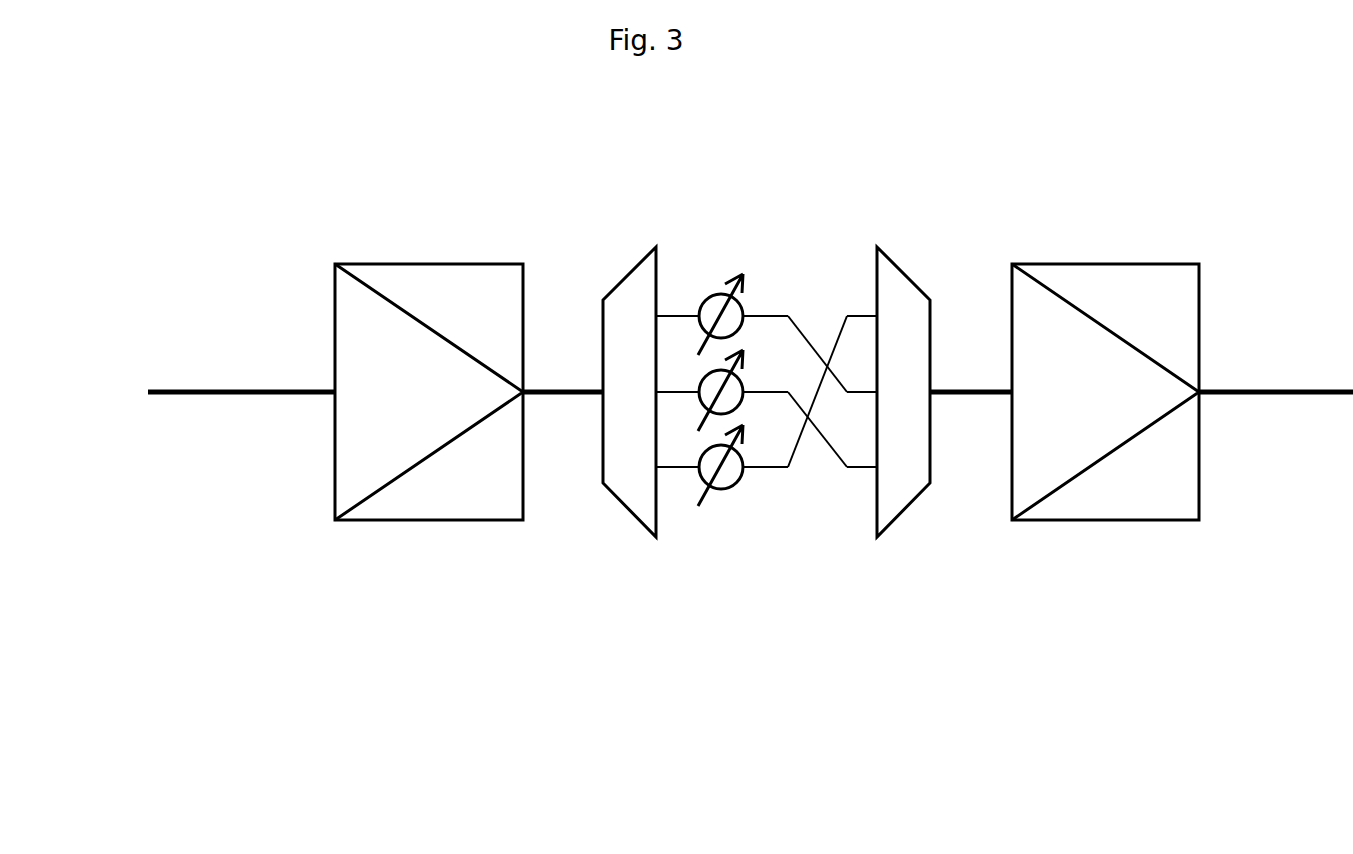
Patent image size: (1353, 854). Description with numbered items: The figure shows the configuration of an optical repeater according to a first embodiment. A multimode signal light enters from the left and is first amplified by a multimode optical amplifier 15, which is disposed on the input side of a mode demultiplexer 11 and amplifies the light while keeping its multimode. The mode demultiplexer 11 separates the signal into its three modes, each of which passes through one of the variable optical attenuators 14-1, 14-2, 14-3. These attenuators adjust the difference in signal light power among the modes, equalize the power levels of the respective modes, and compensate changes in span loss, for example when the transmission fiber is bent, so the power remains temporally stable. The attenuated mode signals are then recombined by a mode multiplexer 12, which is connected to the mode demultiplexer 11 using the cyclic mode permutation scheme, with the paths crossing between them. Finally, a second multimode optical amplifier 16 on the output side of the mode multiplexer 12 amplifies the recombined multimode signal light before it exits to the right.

The mode demultiplexer 11 is at (619, 270).
The mode multiplexer 12 is at (908, 272).
The variable optical attenuator 14-1 is at (742, 302).
The variable optical attenuator 14-2 is at (742, 400).
The variable optical attenuator 14-3 is at (724, 490).
The multimode optical amplifier 15 is at (428, 264).
The multimode optical amplifier 16 is at (1108, 264).